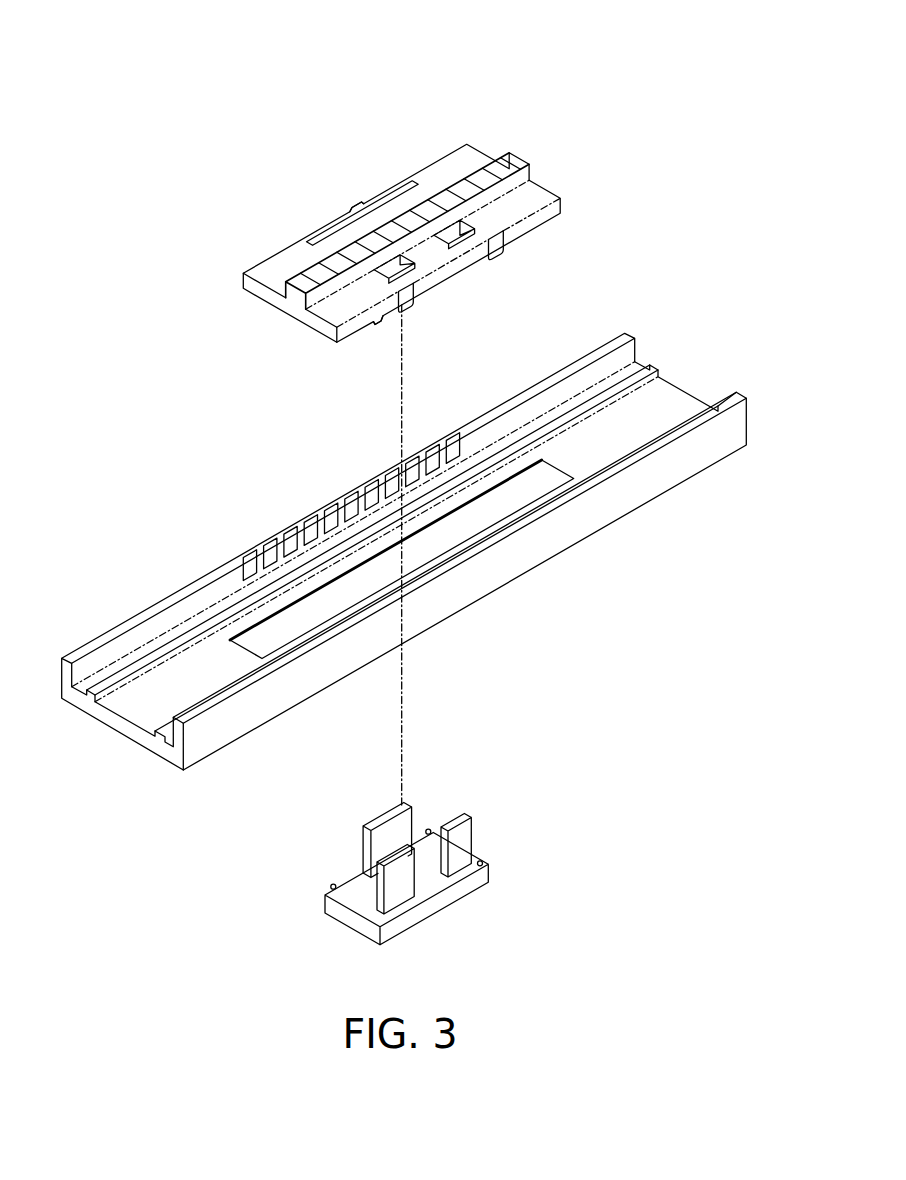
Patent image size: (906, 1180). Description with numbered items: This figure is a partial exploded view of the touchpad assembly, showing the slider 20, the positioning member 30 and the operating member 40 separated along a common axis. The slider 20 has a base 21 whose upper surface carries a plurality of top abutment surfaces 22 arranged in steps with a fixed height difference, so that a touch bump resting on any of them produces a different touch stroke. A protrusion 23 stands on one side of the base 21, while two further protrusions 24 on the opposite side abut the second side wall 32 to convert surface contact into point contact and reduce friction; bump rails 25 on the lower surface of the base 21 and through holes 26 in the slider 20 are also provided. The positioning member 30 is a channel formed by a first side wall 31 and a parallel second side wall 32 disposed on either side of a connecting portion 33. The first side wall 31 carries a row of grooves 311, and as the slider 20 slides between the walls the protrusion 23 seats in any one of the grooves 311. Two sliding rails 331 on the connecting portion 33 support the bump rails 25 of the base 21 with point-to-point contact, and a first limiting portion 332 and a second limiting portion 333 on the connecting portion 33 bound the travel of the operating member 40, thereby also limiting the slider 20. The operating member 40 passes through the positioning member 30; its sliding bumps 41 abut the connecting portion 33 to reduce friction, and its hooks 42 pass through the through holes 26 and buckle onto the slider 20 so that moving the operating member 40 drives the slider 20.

The slider 20 is at (554, 74).
The base 21 is at (460, 163).
The top abutment surfaces 22 is at (392, 182).
The protrusion 23 is at (354, 207).
The another protrusion 24 is at (502, 258).
The bump rails 25 is at (377, 321).
The through holes 26 is at (455, 238).
The positioning member 30 is at (716, 326).
The first side wall 31 is at (617, 349).
The grooves 311 is at (235, 557).
The second side wall 32 is at (722, 440).
The connecting portion 33 is at (683, 403).
The sliding rails 331 is at (172, 722).
The first limiting portion 332 is at (257, 657).
The second limiting portion 333 is at (573, 490).
The operating member 40 is at (468, 774).
The sliding bumps 41 is at (428, 829).
The hooks 42 is at (383, 826).